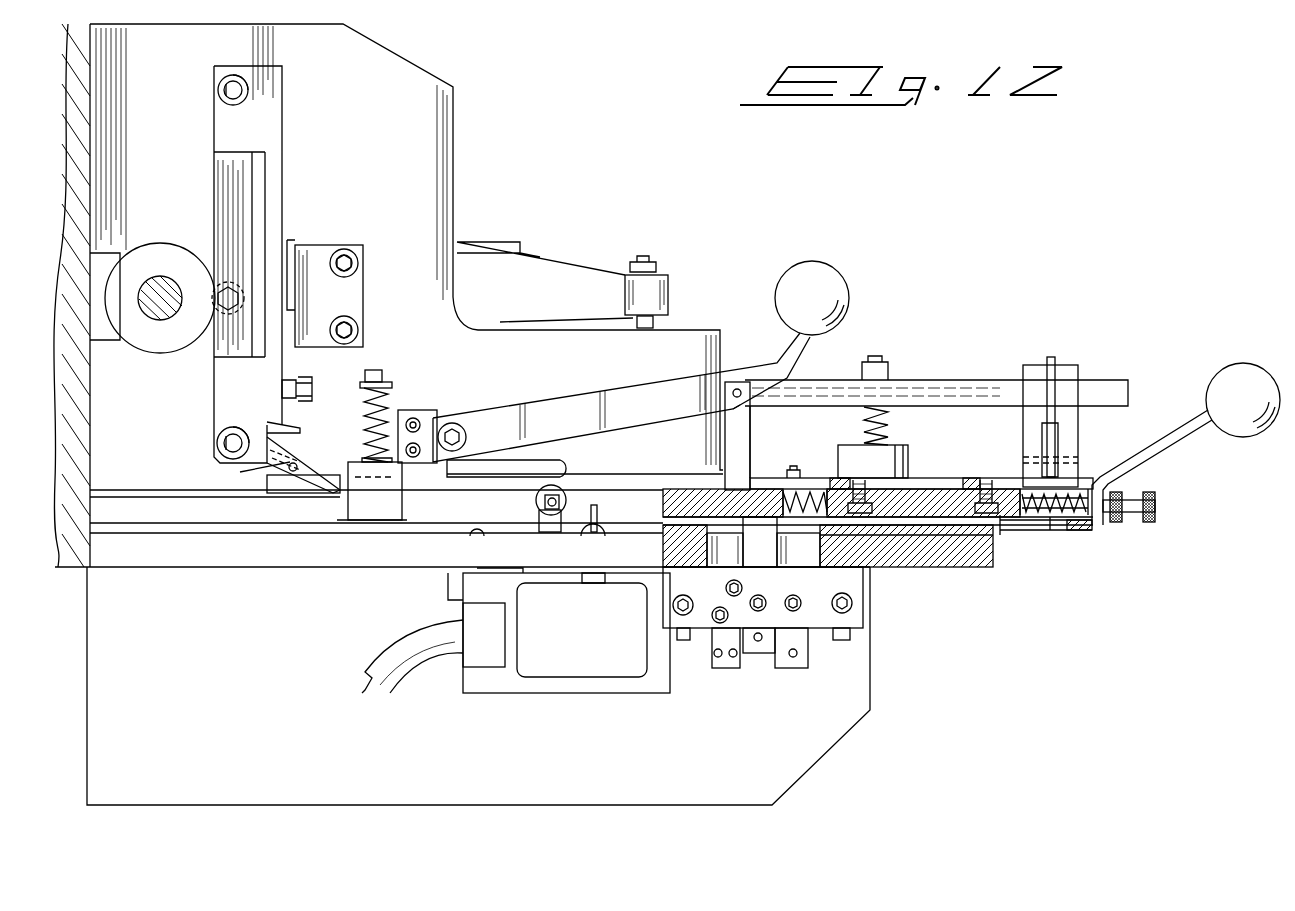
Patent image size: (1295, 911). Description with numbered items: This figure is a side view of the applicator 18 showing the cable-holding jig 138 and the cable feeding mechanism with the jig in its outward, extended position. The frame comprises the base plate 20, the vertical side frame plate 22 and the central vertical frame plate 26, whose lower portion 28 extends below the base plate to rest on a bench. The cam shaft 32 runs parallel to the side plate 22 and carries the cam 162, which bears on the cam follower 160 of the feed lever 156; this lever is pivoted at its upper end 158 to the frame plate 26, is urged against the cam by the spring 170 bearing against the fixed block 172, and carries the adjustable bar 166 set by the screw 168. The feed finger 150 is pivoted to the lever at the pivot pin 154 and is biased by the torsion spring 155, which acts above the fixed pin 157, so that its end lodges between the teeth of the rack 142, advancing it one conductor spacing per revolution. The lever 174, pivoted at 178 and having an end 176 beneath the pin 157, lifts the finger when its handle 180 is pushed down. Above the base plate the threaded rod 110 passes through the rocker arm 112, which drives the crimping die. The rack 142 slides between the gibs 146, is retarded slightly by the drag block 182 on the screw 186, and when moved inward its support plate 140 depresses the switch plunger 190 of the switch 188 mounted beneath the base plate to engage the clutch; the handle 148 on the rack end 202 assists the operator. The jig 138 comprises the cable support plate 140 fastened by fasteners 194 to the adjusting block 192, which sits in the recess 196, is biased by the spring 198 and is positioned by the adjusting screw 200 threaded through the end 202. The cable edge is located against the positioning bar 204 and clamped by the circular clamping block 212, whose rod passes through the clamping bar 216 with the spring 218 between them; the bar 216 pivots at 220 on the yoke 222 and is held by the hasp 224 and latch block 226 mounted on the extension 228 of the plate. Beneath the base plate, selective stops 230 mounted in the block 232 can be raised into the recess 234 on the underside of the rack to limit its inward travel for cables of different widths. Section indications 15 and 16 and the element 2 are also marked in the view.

The plate 2 is at (930, 480).
The section line 15- 15 is at (987, 372).
The section line 16- 16 is at (375, 350).
The applicator 18 is at (633, 58).
The base plate 20 is at (190, 552).
The vertical side frame plate 22 is at (68, 165).
The central vertical frame plate 26 is at (400, 60).
The lower extension of frame plate 28 is at (820, 740).
The cam shaft 32 is at (158, 287).
The threaded rod 110 is at (650, 264).
The rocker arm 112 is at (672, 297).
The jig 138 is at (1082, 368).
The cable support plate 140 is at (822, 478).
The rack 142 is at (688, 496).
The gibs 146 is at (406, 523).
The handle 148 is at (1248, 428).
The feed finger 150 is at (325, 478).
The pivot pin 154 is at (222, 438).
The torsion spring 155 is at (298, 431).
The feed lever 156 is at (260, 120).
The fixed pin 157 is at (280, 470).
The upper end pivot 158 is at (218, 94).
The cam follower 160 is at (228, 316).
The cam 162 is at (140, 255).
The bar 166 is at (220, 170).
The screw 168 is at (282, 384).
The spring 170 is at (292, 245).
The block 172 is at (363, 292).
The lever 174 is at (575, 406).
The lever end 176 is at (277, 494).
The pivot 178 is at (452, 423).
The handle 180 is at (830, 285).
The drag block 182 is at (348, 504).
The screw 186 is at (385, 378).
The solenoid 188 is at (545, 670).
The switch plunger 190 is at (558, 490).
The adjusting block 192 is at (938, 522).
The fasteners 194 is at (877, 502).
The recess 196 is at (1040, 498).
The spring 198 is at (795, 527).
The adjusting screw 200 is at (1130, 512).
The rack end 202 is at (1080, 524).
The positioning bar 204 is at (790, 472).
The clamping block 212 is at (898, 450).
The clamping bar 216 is at (1008, 384).
The spring 218 is at (866, 408).
The pivot 220 is at (740, 389).
The yoke 222 is at (733, 410).
The hasp 224 is at (1055, 358).
The latch block 226 is at (1078, 425).
The extension 228 is at (1082, 484).
The stops 230 is at (775, 665).
The block 232 is at (865, 615).
The recess 234 is at (1050, 530).